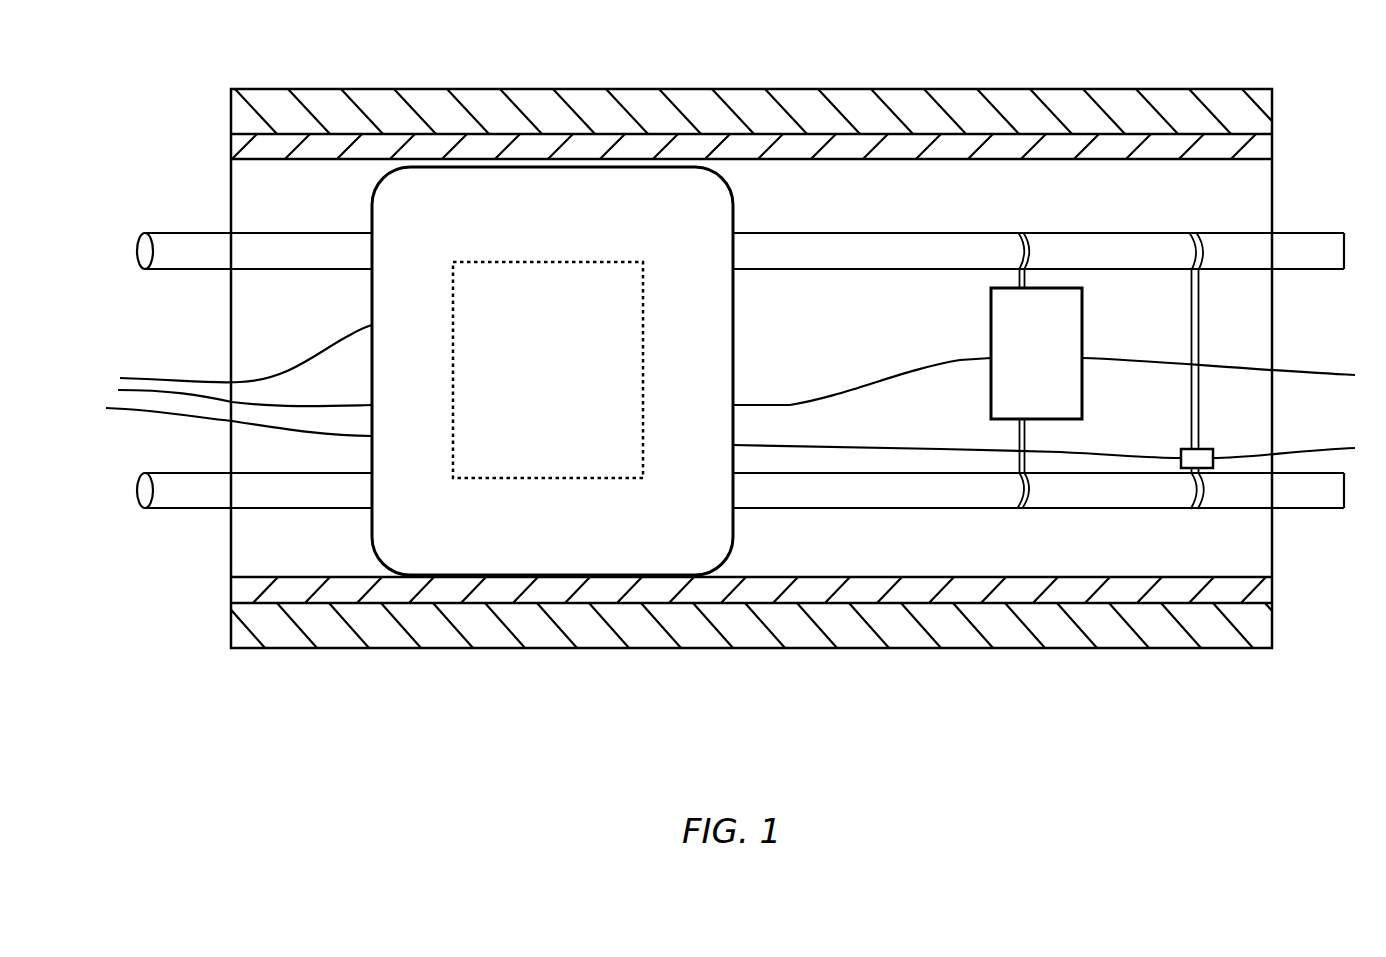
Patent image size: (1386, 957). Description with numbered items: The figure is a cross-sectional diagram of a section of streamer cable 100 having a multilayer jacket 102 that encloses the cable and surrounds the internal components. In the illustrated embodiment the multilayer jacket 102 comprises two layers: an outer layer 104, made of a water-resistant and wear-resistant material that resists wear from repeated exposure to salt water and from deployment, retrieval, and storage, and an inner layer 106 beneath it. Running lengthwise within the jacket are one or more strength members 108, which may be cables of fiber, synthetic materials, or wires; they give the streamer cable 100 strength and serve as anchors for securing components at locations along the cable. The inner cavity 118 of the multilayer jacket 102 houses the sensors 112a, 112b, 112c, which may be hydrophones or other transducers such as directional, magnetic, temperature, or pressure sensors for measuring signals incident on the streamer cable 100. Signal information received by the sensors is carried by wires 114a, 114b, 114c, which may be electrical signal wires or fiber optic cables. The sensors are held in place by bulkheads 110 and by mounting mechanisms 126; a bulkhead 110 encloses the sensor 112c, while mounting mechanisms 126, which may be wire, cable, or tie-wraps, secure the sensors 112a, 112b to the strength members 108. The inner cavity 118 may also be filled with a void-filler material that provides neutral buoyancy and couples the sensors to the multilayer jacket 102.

The streamer cable 100 is at (1108, 50).
The multilayer jacket 102 is at (222, 116).
The outer layer 104 is at (490, 89).
The inner layer 106 is at (231, 145).
The strength member 108 is at (206, 268).
The bulkhead 110 is at (733, 210).
The sensor 112a is at (991, 320).
The sensor 112b is at (1208, 449).
The sensor 112c is at (567, 262).
The wire 114a is at (900, 372).
The wire 114b is at (968, 449).
The wire 114c is at (348, 330).
The inner cavity 118 is at (1235, 215).
The mounting mechanism 126 is at (1020, 233).